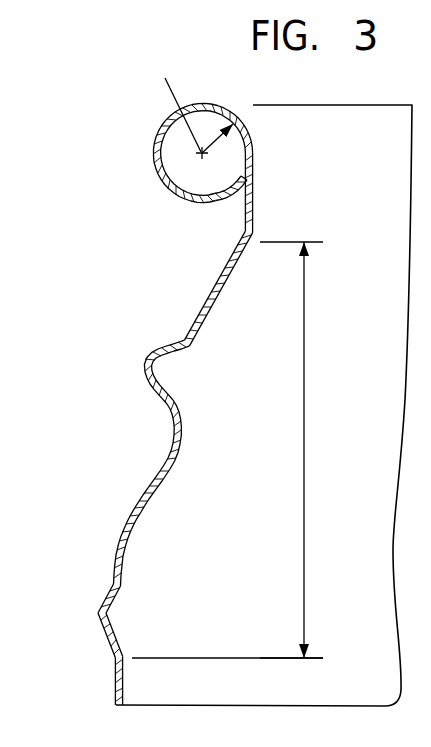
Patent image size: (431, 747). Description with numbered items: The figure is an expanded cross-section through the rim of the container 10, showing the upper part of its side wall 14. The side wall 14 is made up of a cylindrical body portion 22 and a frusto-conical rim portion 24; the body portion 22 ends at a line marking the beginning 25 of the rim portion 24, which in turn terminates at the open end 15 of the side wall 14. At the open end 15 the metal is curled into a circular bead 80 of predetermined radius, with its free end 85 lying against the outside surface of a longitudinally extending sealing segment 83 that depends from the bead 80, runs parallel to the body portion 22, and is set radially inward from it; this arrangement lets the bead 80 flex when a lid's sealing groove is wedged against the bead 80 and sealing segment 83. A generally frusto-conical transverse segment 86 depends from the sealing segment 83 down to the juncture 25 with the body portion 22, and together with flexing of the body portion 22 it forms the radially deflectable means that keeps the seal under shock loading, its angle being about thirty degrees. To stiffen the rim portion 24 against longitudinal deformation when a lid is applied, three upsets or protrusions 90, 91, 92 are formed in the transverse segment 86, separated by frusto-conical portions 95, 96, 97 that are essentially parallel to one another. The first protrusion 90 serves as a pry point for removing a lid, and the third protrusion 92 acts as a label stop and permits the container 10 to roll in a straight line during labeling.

The container 10 is at (195, 393).
The side wall 14 is at (110, 698).
The open end 15 is at (318, 103).
The cylindrical body portion 22 is at (112, 669).
The frusto-conical rim portion 24 is at (161, 462).
The beginning of frusto-conical rim portion 25 is at (211, 656).
The circular bead 80 is at (153, 148).
The sealing segment 83 is at (254, 188).
The free end 85 is at (193, 201).
The transverse segment 86 is at (305, 478).
The first protrusion 90 is at (143, 363).
The second protrusion 91 is at (121, 537).
The third protrusion 92 is at (104, 613).
The frusto-conical portion 95 is at (215, 303).
The frusto-conical portion 96 is at (152, 503).
The frusto-conical portion 97 is at (119, 587).